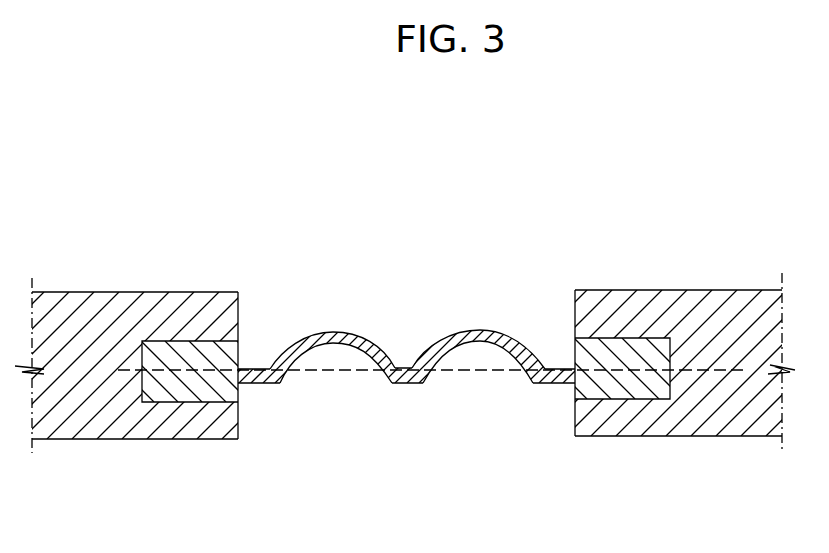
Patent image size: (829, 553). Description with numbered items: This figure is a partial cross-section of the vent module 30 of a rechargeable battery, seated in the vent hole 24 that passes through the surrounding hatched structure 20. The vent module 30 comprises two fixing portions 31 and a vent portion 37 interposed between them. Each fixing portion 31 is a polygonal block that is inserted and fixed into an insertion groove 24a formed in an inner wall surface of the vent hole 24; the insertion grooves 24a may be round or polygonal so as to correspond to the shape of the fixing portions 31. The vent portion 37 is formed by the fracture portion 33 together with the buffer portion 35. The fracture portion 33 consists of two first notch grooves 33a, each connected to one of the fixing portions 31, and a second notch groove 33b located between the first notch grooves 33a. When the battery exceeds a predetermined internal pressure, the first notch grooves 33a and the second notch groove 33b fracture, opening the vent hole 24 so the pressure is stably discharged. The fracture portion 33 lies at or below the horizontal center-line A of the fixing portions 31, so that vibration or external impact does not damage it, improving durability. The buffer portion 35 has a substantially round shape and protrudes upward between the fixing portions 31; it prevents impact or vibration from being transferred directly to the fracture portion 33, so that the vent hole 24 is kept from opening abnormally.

The housing / base member 20 is at (77, 292).
The vent hole 24 is at (238, 308).
The insertion groove 24a is at (175, 346).
The fixing portion 31 is at (172, 392).
The fracture portion 33 is at (552, 466).
The first notch groove 33a is at (252, 390).
The second notch groove 33b is at (410, 388).
The buffer portion 35 is at (333, 332).
The vent portion 37 is at (715, 465).
The vent module 30 is at (376, 257).
The horizontal center-line A is at (692, 370).